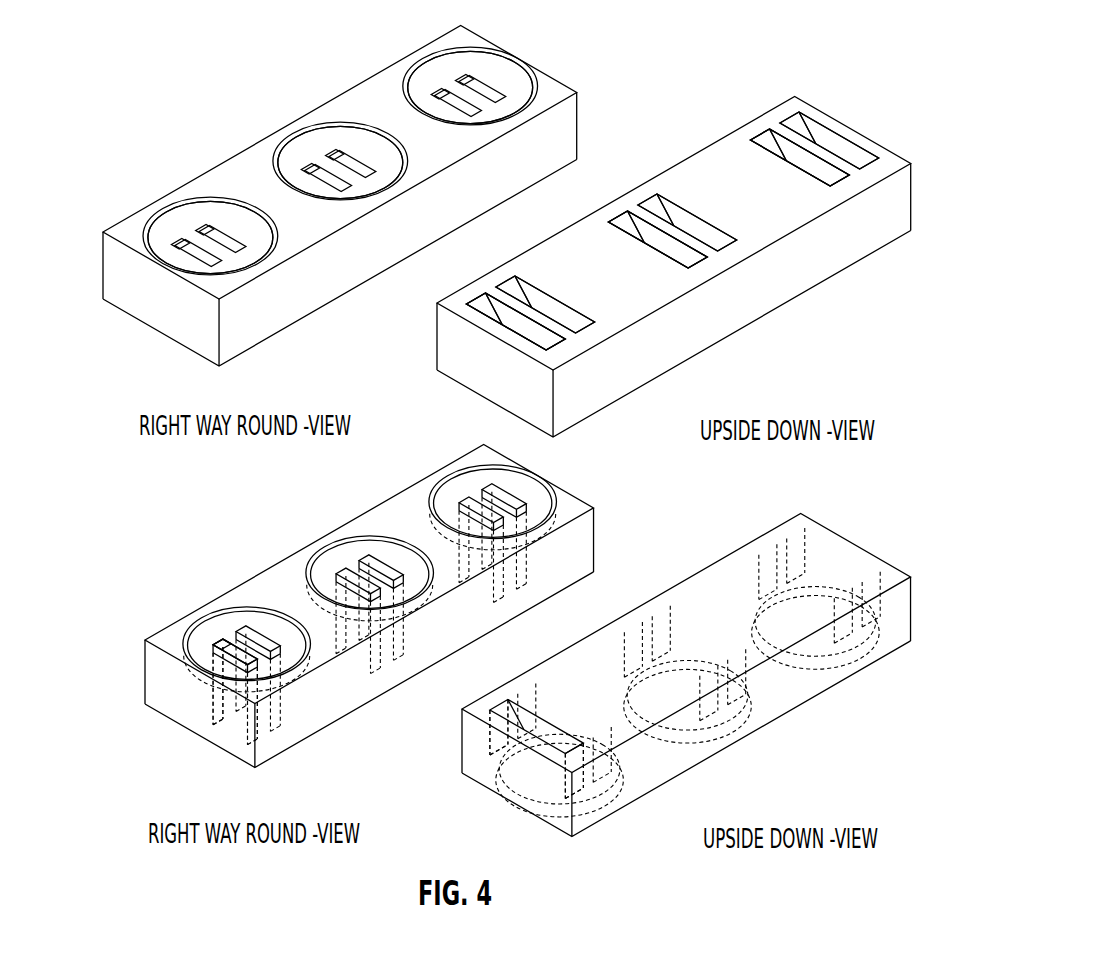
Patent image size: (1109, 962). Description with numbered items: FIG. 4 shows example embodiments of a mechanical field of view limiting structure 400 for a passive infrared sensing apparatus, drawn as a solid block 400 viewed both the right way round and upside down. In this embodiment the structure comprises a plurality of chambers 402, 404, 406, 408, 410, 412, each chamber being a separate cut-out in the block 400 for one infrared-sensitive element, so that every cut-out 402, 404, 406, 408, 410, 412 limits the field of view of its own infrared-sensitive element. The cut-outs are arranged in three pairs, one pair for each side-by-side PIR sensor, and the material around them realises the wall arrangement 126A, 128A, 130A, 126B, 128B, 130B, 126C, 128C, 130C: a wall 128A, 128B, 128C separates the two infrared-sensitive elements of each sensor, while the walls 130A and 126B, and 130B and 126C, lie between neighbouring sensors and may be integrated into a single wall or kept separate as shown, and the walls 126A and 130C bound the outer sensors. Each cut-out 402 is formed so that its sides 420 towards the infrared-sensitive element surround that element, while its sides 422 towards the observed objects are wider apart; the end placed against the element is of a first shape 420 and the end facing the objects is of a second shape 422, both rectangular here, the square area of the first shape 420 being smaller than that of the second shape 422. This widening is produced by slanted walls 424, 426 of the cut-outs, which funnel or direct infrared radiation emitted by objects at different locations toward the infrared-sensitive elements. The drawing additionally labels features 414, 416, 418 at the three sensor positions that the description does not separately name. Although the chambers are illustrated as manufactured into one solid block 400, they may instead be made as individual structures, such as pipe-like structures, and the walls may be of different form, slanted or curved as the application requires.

The mechanical field of view limiting structure 400 is at (108, 310).
The chamber 402 is at (185, 245).
The chamber 404 is at (207, 232).
The chamber 406 is at (320, 173).
The chamber 408 is at (340, 157).
The chamber 410 is at (448, 97).
The chamber 412 is at (470, 83).
The first recess 414 is at (175, 222).
The second recess 416 is at (308, 140).
The third recess 418 is at (432, 72).
The sides of the cut-out towards the infrared-sensitive element 420 is at (250, 673).
The sides of the cut-out towards the objects 422 is at (220, 740).
The slanted wall 424 is at (188, 697).
The slanted wall 426 is at (260, 735).
The wall 126A is at (183, 264).
The wall 126B is at (320, 185).
The wall 126C is at (447, 110).
The wall 128A is at (222, 250).
The wall 128B is at (350, 178).
The wall 128C is at (482, 103).
The wall 130A is at (243, 228).
The wall 130B is at (375, 160).
The wall 130C is at (500, 78).